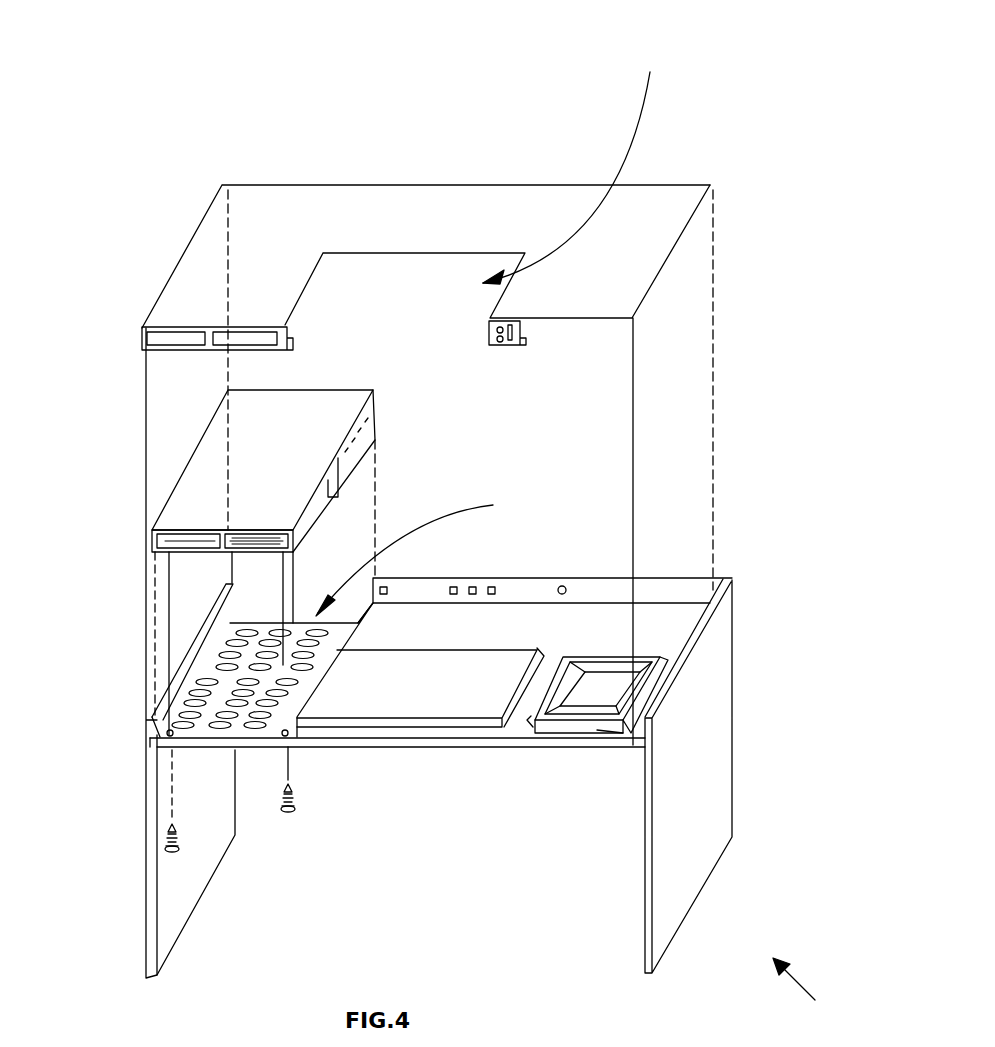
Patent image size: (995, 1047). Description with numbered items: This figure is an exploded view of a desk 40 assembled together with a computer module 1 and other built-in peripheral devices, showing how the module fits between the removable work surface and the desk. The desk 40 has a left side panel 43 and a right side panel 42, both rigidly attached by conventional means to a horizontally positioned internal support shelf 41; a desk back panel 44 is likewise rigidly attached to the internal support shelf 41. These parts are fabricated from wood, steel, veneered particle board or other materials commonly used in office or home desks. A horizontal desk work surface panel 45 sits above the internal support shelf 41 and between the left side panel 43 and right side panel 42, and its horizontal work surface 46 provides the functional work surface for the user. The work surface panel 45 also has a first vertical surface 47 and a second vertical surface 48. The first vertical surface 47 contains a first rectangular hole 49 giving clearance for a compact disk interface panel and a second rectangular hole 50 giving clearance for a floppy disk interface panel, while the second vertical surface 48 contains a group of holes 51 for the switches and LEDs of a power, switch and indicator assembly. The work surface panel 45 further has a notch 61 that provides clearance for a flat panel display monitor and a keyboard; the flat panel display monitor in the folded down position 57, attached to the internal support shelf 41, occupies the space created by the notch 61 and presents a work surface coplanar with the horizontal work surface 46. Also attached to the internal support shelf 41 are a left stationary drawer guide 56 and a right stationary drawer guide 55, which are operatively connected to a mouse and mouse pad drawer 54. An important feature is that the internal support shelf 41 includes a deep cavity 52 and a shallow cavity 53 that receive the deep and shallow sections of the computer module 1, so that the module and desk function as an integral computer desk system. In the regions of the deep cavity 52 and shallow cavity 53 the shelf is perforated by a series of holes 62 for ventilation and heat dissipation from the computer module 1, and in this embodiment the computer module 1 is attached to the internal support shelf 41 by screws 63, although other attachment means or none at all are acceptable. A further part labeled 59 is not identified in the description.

The computer module 1 is at (220, 475).
The desk 40 is at (811, 996).
The internal support shelf 41 is at (668, 625).
The right side panel 42 is at (707, 717).
The left side panel 43 is at (146, 775).
The desk back panel 44 is at (658, 590).
The horizontal desk work surface panel 45 is at (408, 188).
The horizontal work surface 46 is at (557, 207).
The first vertical surface 47 is at (289, 332).
The second vertical surface 48 is at (490, 333).
The first rectangular hole 49 is at (265, 338).
The second rectangular hole 50 is at (193, 338).
The group of holes 51 is at (500, 345).
The deep cavity 52 is at (419, 553).
The shallow cavity 53 is at (238, 740).
The mouse and mouse pad drawer 54 is at (597, 730).
The right stationary drawer guide 55 is at (657, 684).
The left stationary drawer guide 56 is at (525, 722).
The flat panel display monitor in the folded down position 57 is at (413, 690).
The deck front edge 59 is at (360, 735).
The notch 61 is at (576, 166).
The holes 62 is at (222, 740).
The screws 63 is at (175, 848).